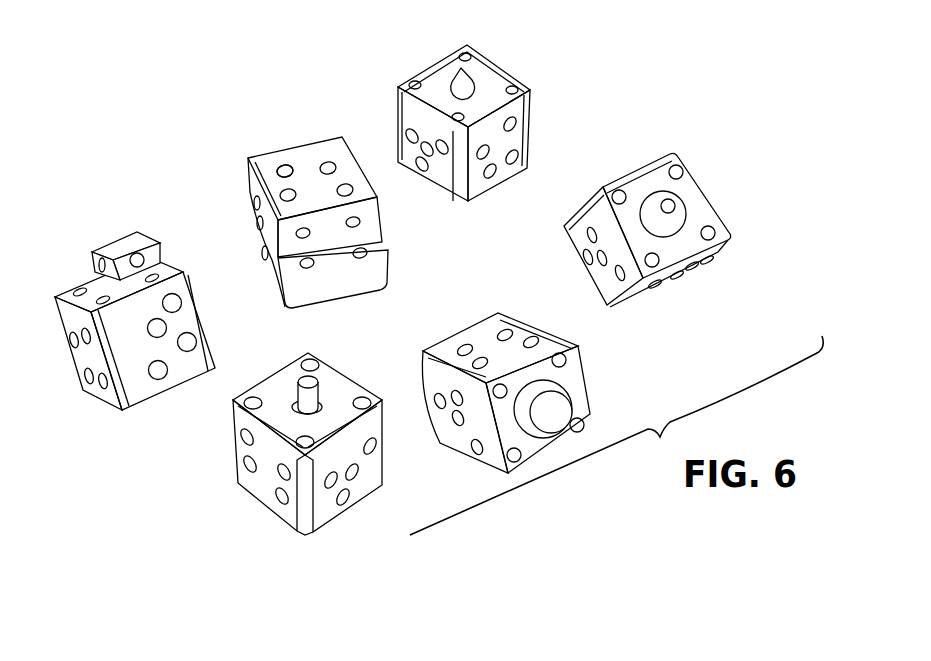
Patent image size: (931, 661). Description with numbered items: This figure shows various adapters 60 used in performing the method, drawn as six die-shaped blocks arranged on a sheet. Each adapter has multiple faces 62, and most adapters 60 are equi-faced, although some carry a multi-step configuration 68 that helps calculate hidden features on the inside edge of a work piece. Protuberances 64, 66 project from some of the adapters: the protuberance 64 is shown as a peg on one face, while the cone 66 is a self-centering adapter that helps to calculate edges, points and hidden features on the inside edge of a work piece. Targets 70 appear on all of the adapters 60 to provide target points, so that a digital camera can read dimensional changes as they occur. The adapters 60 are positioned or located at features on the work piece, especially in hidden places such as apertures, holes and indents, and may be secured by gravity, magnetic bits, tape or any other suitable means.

The adapters 60 is at (141, 200).
The faces 62 is at (275, 387).
The protuberance 64 is at (315, 388).
The cone 66 is at (468, 79).
The multi-step configuration 68 is at (385, 243).
The targets 70 is at (490, 171).